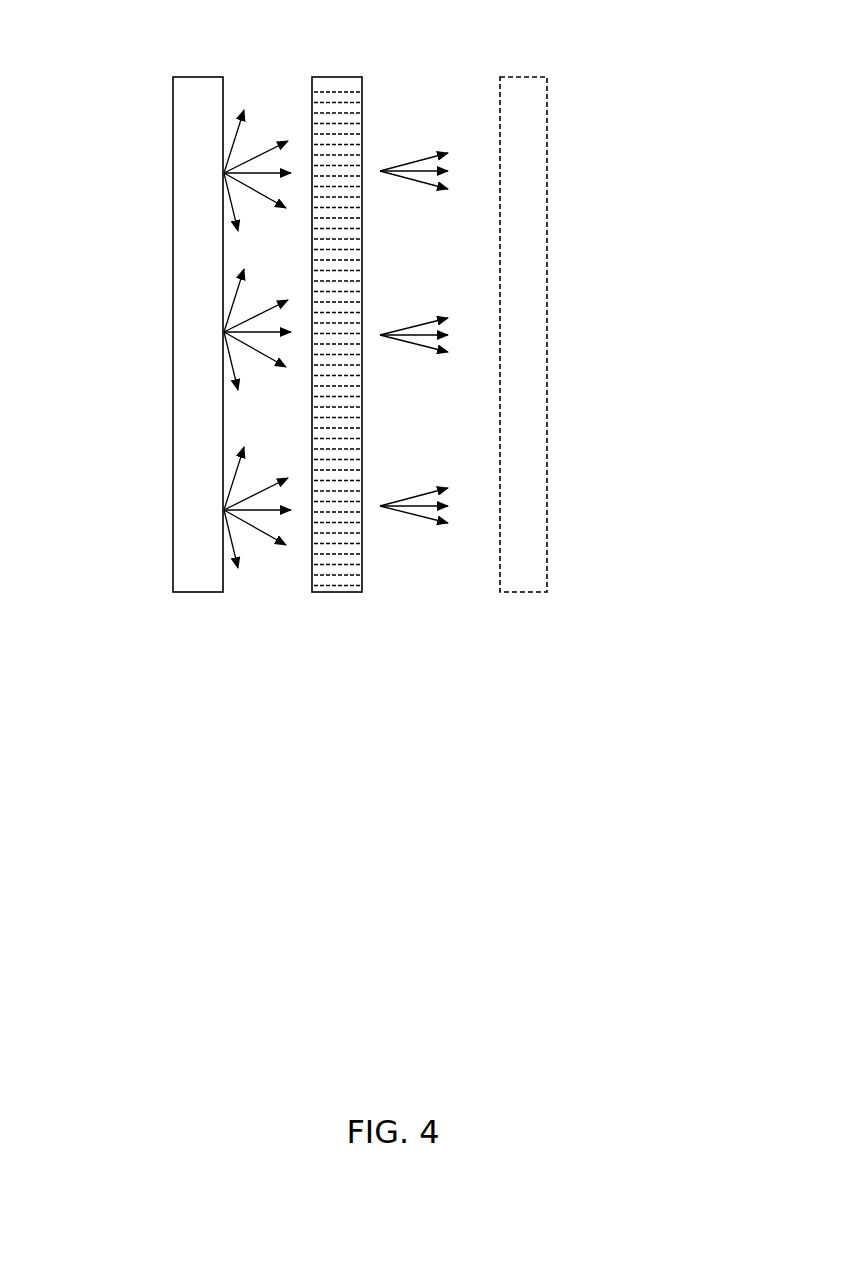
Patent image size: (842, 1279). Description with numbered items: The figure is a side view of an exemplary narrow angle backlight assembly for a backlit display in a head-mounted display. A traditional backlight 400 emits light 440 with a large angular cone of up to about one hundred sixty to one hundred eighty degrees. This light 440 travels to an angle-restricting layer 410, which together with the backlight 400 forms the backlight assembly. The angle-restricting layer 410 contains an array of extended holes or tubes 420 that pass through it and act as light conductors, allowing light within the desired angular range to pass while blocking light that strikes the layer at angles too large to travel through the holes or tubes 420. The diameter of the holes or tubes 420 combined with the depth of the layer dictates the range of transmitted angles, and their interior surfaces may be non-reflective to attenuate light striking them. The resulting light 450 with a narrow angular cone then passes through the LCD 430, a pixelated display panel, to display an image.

The backlight 400 is at (152, 80).
The angle-restricting layer 410 is at (304, 77).
The extended holes or tubes 420 is at (369, 117).
The LCD 430 is at (557, 71).
The light emitted by backlight 440 is at (267, 583).
The light with narrow angular cone 450 is at (429, 546).